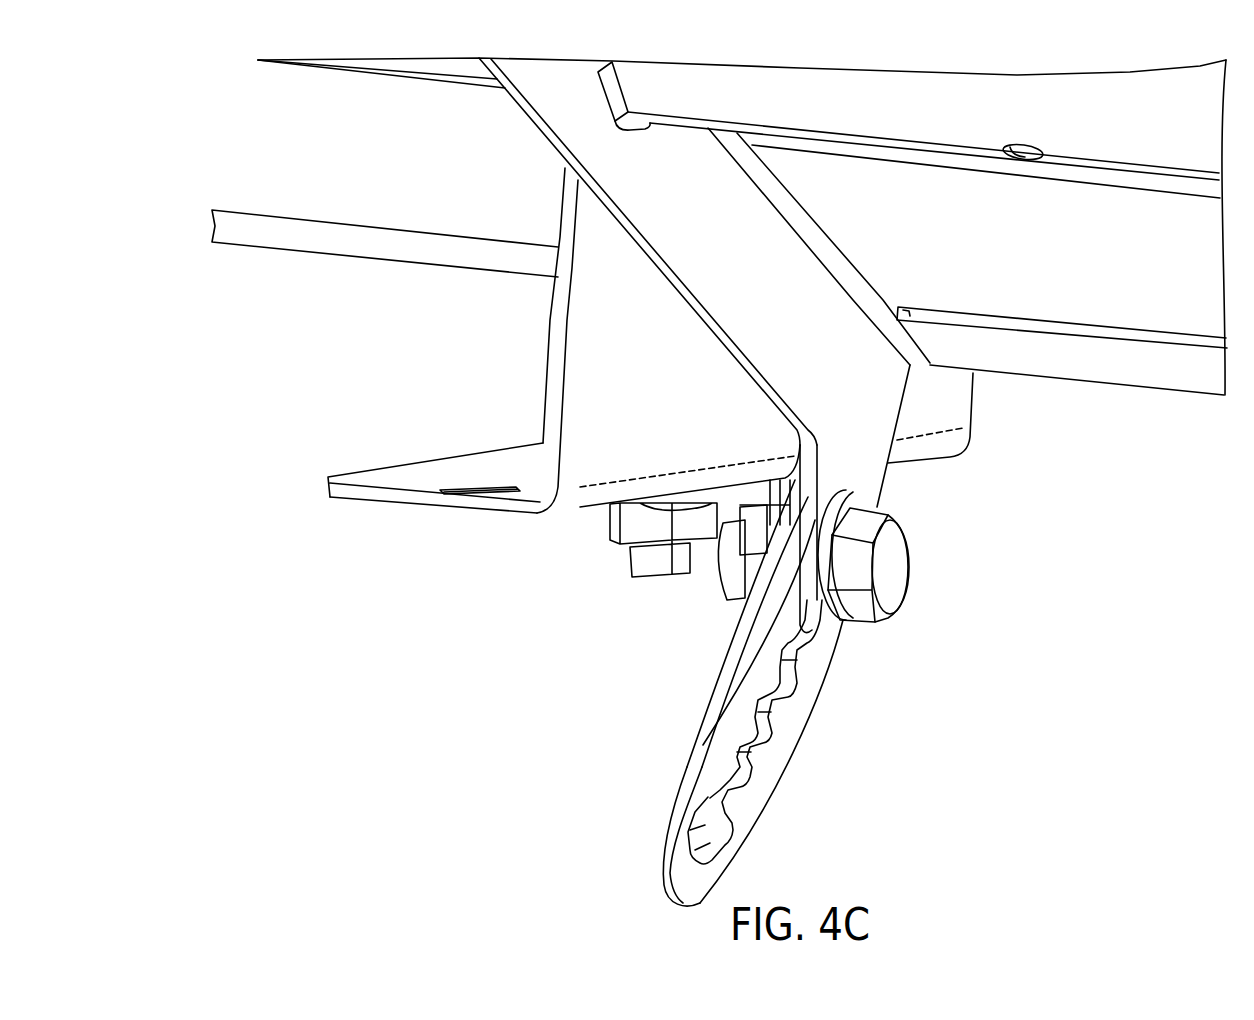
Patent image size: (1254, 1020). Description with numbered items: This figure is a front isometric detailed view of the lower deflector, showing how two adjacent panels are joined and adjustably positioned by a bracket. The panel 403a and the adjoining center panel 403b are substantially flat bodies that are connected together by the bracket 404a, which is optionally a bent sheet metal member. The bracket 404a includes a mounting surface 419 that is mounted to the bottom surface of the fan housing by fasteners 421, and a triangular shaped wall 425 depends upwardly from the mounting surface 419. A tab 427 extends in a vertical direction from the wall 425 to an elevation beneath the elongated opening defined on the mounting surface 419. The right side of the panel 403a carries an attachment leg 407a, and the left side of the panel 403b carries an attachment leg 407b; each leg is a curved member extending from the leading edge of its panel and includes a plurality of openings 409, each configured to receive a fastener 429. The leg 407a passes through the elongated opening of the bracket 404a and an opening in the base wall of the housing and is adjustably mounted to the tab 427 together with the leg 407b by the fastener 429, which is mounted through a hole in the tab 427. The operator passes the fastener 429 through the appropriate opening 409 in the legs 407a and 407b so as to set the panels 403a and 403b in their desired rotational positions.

The panel 403a is at (372, 235).
The panel 403b is at (1145, 368).
The bracket 404a is at (423, 502).
The attachment leg 407a is at (733, 627).
The attachment leg 407b is at (755, 805).
The openings 409 is at (782, 717).
The mounting surface 419 is at (407, 480).
The fasteners 421 is at (610, 533).
The triangular shaped wall 425 is at (582, 360).
The tab 427 is at (795, 507).
The fastener 429 is at (893, 563).